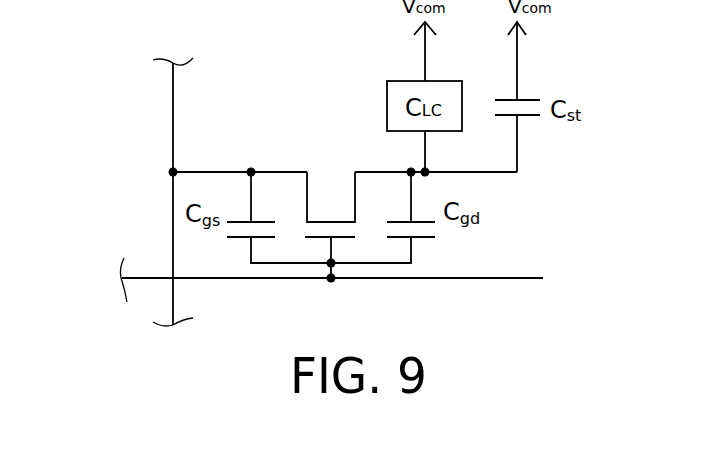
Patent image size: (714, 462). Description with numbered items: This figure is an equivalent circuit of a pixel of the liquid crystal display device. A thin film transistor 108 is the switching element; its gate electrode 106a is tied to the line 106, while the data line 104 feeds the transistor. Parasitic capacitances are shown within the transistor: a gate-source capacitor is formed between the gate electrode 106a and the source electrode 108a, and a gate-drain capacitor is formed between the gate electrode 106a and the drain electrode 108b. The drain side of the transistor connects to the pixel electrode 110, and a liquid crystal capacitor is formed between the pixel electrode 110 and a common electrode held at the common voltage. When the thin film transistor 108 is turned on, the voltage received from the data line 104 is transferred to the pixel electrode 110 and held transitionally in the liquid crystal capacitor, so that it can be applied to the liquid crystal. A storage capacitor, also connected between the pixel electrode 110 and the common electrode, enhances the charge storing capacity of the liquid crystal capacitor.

The data line 104 is at (173, 93).
The gate line 106 is at (487, 279).
The gate electrode 106a is at (344, 238).
The thin film transistor 108 is at (305, 200).
The source electrode 108a is at (282, 170).
The drain electrode 108b is at (392, 170).
The pixel electrode 110 is at (502, 173).